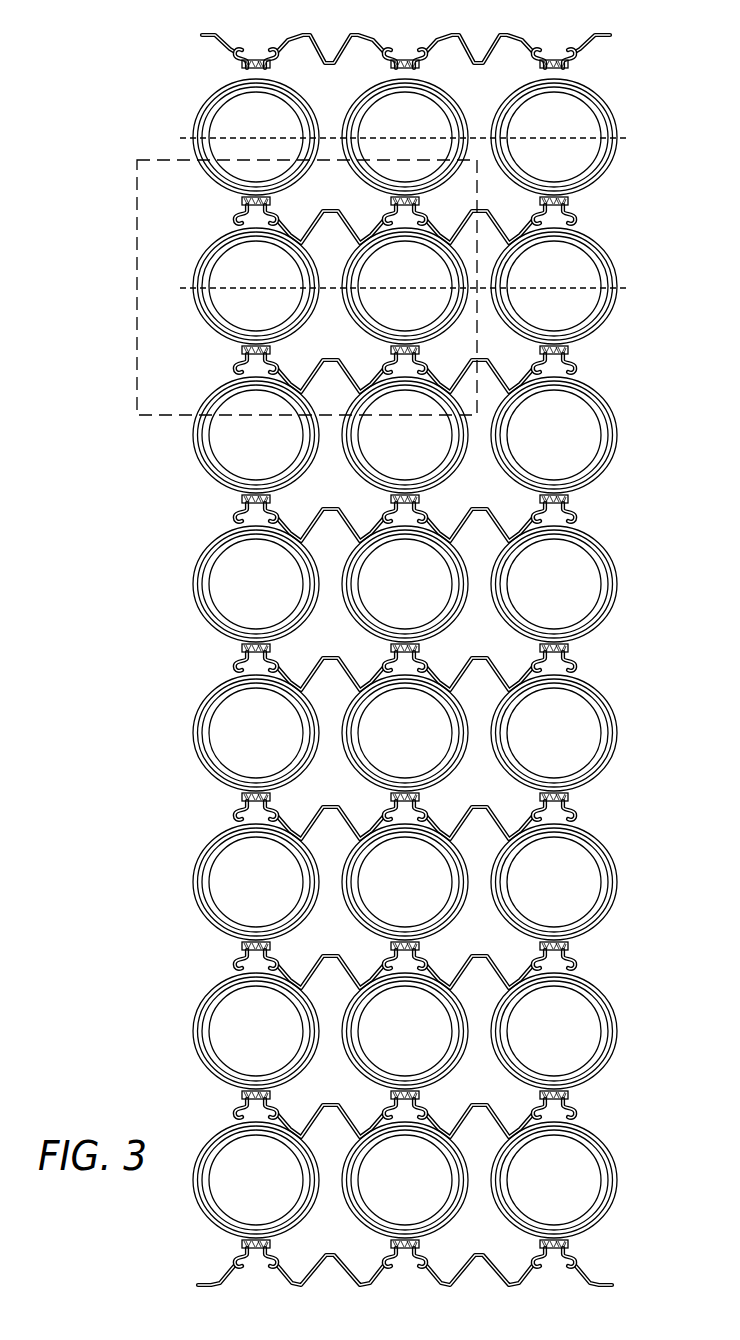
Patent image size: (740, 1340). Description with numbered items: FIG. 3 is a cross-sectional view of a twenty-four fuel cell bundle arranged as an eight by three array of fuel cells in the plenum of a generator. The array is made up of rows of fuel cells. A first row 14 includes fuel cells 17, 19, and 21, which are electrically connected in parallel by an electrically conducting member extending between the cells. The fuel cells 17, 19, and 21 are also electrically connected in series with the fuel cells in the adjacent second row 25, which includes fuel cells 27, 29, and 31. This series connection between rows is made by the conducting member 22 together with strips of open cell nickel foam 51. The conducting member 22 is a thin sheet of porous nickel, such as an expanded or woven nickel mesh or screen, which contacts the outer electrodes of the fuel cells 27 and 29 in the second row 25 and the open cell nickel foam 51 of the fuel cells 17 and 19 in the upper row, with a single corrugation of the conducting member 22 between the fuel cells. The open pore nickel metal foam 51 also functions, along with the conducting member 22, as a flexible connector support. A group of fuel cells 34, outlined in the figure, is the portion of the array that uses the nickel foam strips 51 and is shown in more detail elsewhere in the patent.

The first row 14 is at (404, 139).
The fuel cell 17 is at (193, 100).
The fuel cell 19 is at (340, 96).
The fuel cell 21 is at (617, 97).
The conducting member 22 is at (301, 36).
The second row 25 is at (405, 290).
The fuel cell 27 is at (185, 250).
The fuel cell 29 is at (343, 338).
The fuel cell 31 is at (619, 250).
The group of fuel cells 34 is at (135, 248).
The strips of open cell nickel foam 51 is at (420, 201).